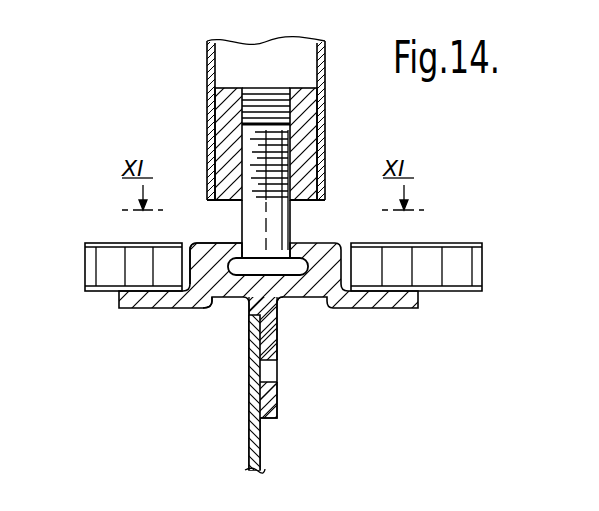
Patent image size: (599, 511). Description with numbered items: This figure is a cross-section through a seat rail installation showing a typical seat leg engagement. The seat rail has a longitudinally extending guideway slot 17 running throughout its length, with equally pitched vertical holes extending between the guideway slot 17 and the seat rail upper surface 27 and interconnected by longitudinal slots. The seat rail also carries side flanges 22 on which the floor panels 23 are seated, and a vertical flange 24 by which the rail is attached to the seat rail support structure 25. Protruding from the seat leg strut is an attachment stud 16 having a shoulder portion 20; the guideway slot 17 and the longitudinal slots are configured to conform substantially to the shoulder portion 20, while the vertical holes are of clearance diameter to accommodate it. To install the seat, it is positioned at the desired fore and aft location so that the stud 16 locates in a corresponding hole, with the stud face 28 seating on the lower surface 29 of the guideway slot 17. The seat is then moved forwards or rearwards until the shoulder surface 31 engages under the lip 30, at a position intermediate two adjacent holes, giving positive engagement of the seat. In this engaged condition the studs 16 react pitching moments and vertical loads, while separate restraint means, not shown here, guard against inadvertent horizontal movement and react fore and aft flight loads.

The attachment stud 16 is at (272, 212).
The guideway slot 17 is at (213, 300).
The shoulder portion 20 is at (207, 172).
The side flange 22 is at (152, 302).
The floor panel 23 is at (98, 243).
The vertical flange 24 is at (268, 402).
The seat rail support structure 25 is at (250, 418).
The seat rail upper surface 27 is at (190, 242).
The stud face 28 is at (246, 298).
The lower surface of the guideway slot 29 is at (286, 274).
The lip 30 is at (302, 256).
The shoulder surface 31 is at (232, 252).